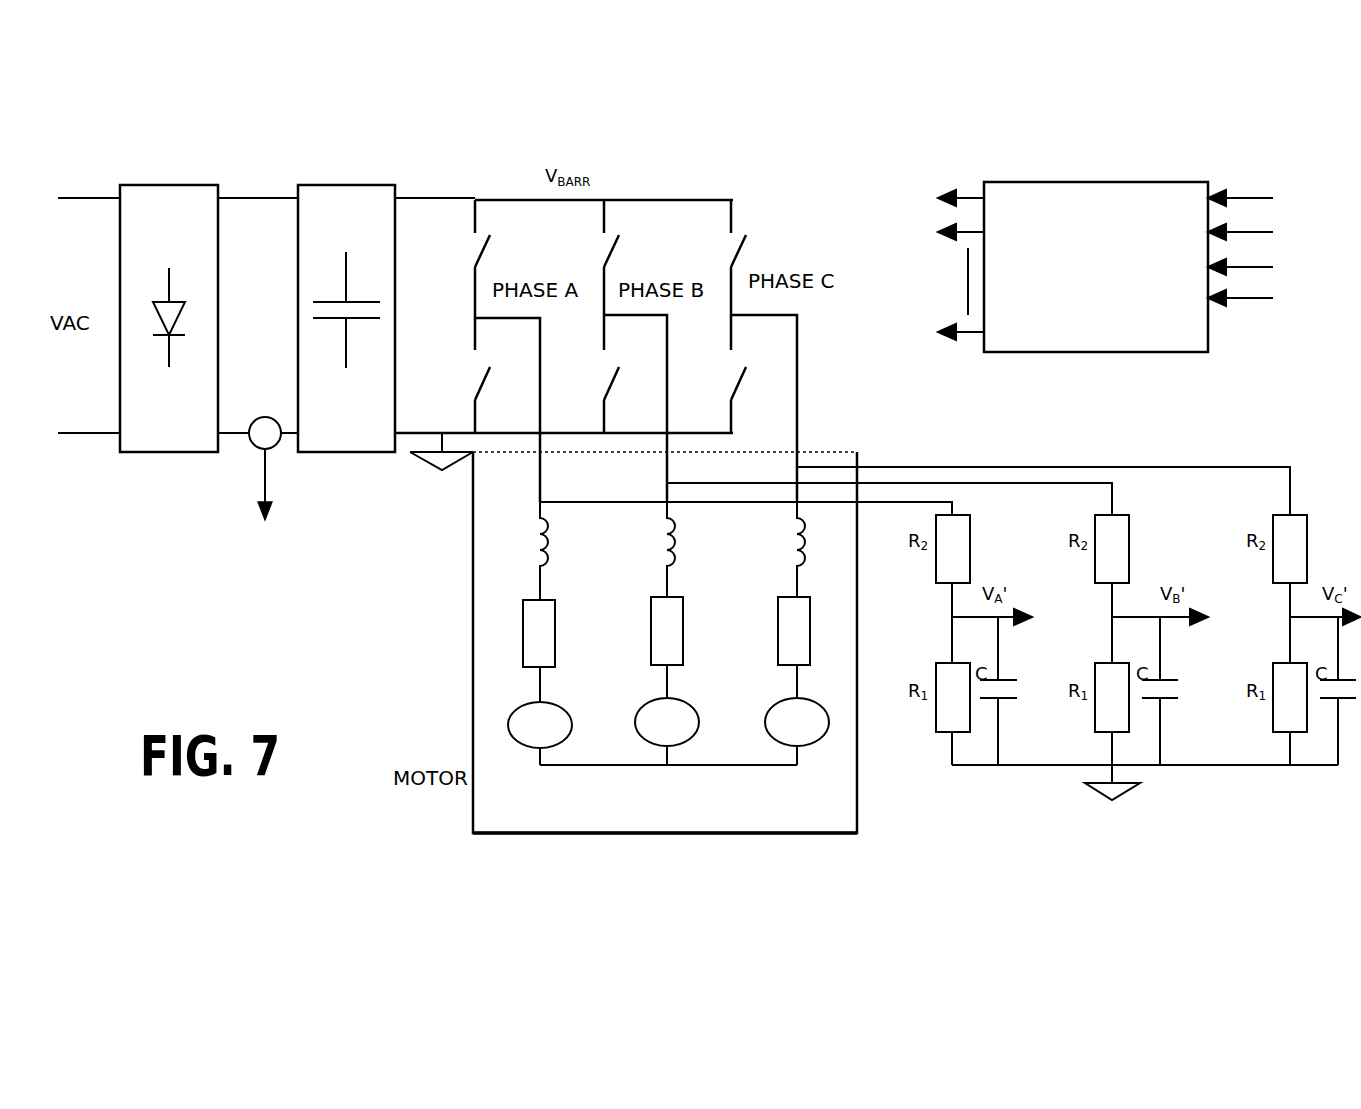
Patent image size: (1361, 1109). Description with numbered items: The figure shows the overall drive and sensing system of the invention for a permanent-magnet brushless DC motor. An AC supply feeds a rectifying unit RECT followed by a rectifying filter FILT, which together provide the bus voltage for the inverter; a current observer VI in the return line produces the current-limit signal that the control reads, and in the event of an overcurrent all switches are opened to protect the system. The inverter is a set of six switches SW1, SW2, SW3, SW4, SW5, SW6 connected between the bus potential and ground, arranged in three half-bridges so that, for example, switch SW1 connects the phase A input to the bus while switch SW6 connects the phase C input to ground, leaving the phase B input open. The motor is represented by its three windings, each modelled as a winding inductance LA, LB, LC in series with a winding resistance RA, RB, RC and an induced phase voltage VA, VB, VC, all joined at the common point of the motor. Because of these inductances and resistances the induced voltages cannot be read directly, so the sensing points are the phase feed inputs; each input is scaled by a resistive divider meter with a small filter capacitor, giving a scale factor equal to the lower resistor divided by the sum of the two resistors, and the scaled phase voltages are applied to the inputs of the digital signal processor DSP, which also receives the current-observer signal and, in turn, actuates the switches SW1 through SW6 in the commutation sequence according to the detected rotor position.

The rectifying unit RECT is at (170, 297).
The rectifying filter FILT is at (349, 297).
The current observer VI is at (262, 492).
The switch SW1 is at (459, 259).
The switch SW2 is at (459, 375).
The switch SW3 is at (588, 257).
The switch SW4 is at (588, 374).
The switch SW5 is at (715, 257).
The switch SW6 is at (715, 374).
The winding inductance LA is at (558, 551).
The winding inductance LB is at (685, 549).
The winding inductance LC is at (814, 549).
The winding resistance RA is at (551, 651).
The winding resistance RB is at (679, 648).
The winding resistance RC is at (806, 648).
The induced phase voltage VA is at (540, 733).
The induced phase voltage VB is at (667, 731).
The induced phase voltage VC is at (797, 731).
The digital signal processor DSP is at (1104, 264).